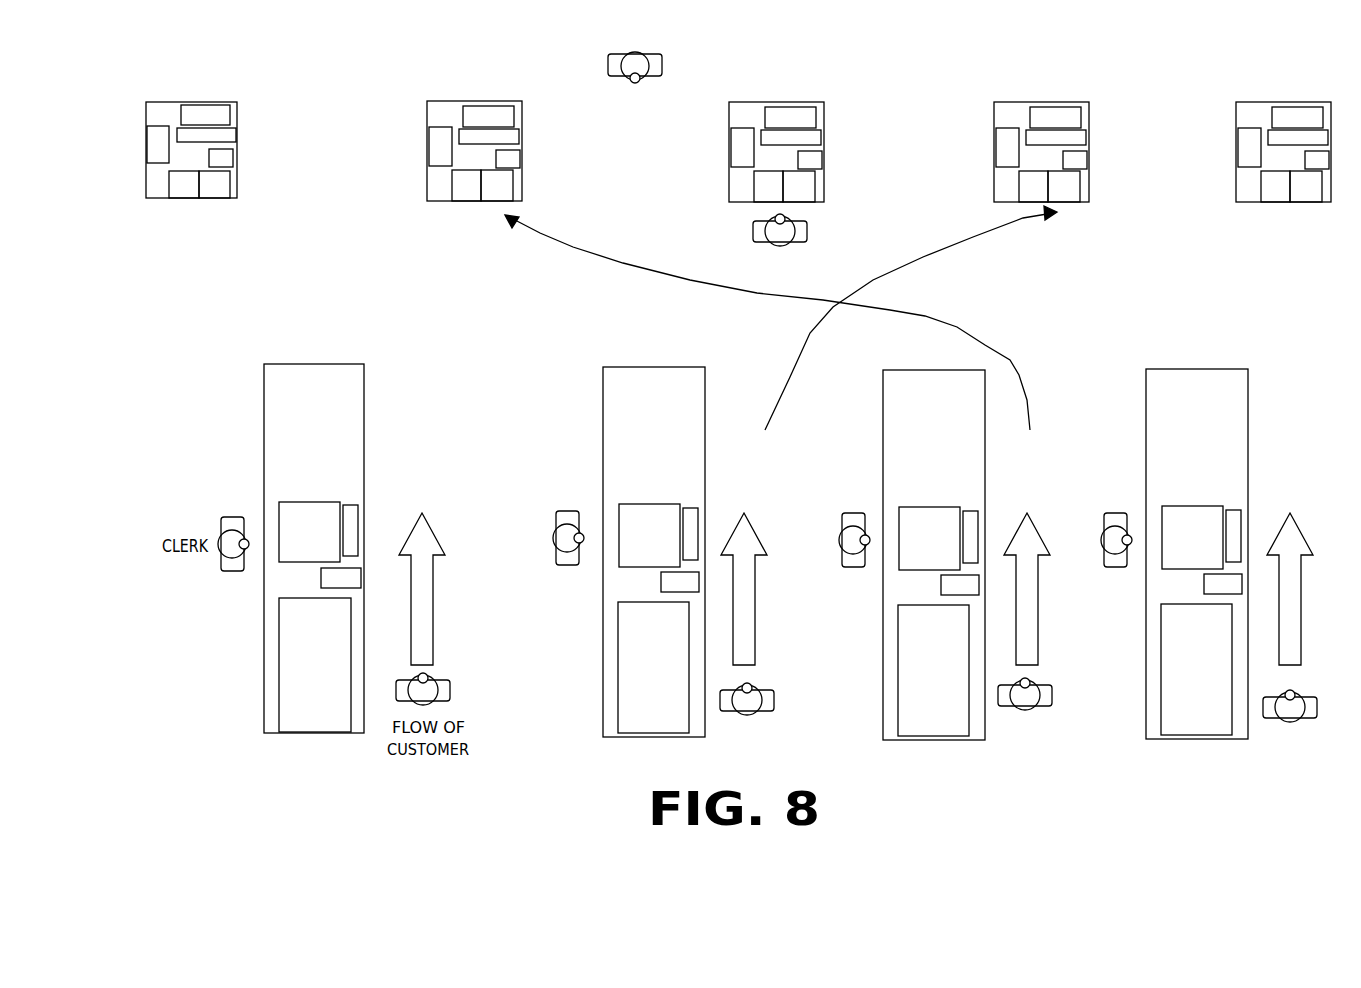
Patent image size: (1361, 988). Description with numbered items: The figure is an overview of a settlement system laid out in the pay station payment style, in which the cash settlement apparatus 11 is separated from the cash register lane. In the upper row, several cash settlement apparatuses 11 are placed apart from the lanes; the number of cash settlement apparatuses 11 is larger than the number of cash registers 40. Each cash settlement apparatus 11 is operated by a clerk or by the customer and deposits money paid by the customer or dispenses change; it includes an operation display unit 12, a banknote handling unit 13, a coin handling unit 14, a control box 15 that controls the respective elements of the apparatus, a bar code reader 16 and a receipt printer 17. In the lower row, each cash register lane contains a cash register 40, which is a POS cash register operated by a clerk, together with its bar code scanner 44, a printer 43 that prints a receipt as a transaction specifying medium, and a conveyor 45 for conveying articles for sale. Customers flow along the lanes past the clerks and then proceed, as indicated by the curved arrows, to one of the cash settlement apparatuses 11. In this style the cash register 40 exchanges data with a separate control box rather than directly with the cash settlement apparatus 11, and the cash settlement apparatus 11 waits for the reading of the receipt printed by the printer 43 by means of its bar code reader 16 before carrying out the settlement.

The cash settlement apparatus 11 is at (234, 186).
The operation display unit 12 is at (225, 133).
The banknote handling unit 13 is at (180, 192).
The coin handling unit 14 is at (213, 190).
The control box 15 is at (210, 112).
The bar code reader 16 is at (220, 158).
The receipt printer 17 is at (154, 134).
The cash register 40 is at (350, 518).
The printer 43 is at (352, 577).
The bar code scanner 44 is at (307, 513).
The conveyor 45 is at (287, 665).